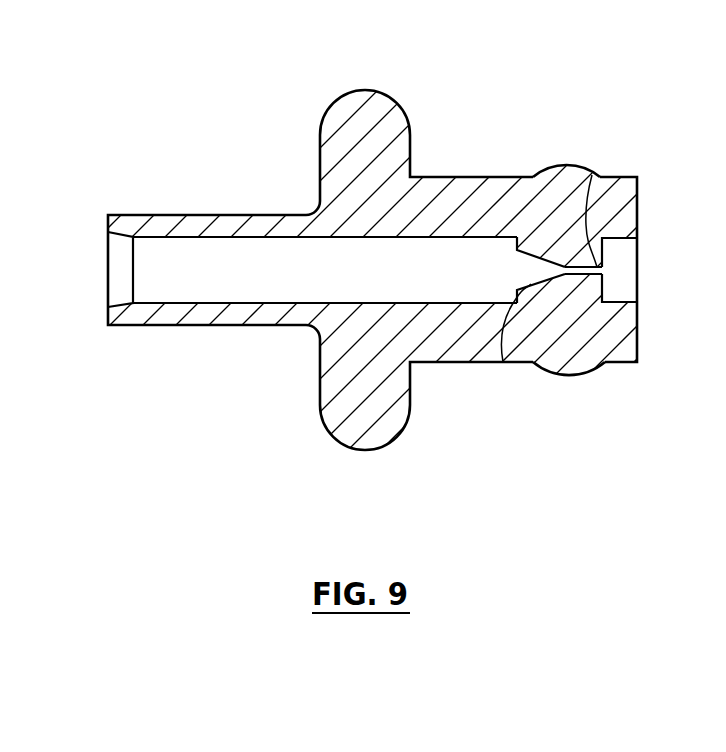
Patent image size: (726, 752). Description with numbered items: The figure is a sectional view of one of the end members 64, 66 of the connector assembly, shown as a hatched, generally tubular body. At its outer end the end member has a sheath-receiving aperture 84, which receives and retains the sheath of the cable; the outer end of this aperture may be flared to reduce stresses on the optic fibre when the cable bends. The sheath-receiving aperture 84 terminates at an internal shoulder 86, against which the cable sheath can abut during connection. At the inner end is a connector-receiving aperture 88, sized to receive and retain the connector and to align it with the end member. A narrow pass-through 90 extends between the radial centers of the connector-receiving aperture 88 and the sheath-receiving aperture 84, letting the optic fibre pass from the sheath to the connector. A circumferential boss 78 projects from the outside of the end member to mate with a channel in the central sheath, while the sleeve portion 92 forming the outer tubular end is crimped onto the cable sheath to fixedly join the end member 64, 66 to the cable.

The end member 64 is at (463, 128).
The end member 66 is at (363, 250).
The circumferential boss 78 is at (577, 166).
The sheath-receiving aperture 84 is at (160, 270).
The internal shoulder 86 is at (503, 362).
The connector-receiving aperture 88 is at (618, 270).
The pass-through 90 is at (595, 175).
The sleeve portion 92 is at (193, 327).